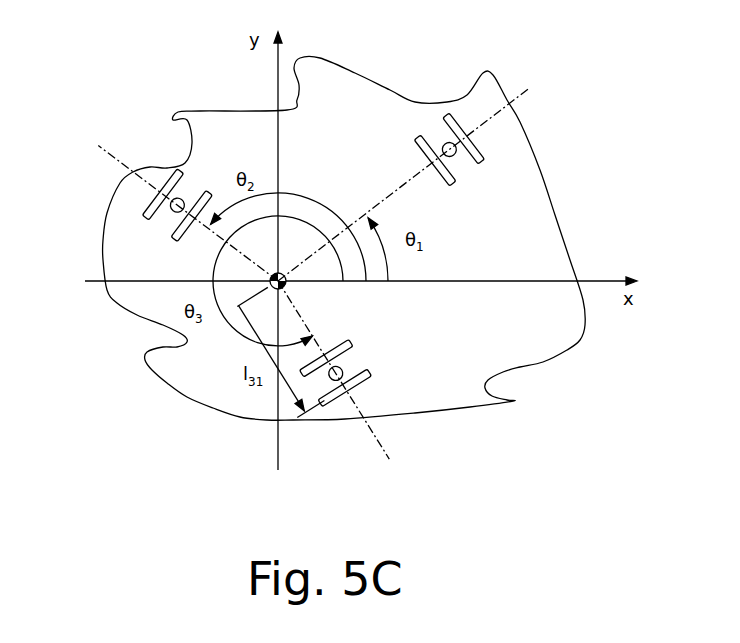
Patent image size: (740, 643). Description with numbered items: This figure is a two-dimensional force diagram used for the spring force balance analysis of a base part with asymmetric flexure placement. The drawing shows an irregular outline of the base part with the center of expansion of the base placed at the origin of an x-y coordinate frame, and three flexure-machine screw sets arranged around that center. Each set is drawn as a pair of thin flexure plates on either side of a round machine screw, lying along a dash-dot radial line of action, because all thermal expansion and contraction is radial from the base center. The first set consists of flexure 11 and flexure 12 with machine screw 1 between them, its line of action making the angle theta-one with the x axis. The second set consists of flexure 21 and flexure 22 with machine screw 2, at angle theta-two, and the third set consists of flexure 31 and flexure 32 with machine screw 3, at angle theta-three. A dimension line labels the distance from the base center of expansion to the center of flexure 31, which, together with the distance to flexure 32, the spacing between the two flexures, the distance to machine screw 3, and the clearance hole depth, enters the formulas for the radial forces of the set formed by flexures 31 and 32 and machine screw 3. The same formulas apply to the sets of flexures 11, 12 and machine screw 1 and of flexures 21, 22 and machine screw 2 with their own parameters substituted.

The machine screw 1 is at (456, 152).
The flexure 11 is at (482, 161).
The flexure 12 is at (453, 184).
The machine screw 2 is at (174, 199).
The flexure 21 is at (160, 192).
The flexure 22 is at (206, 194).
The machine screw 3 is at (342, 376).
The flexure 31 is at (370, 377).
The flexure 32 is at (331, 359).